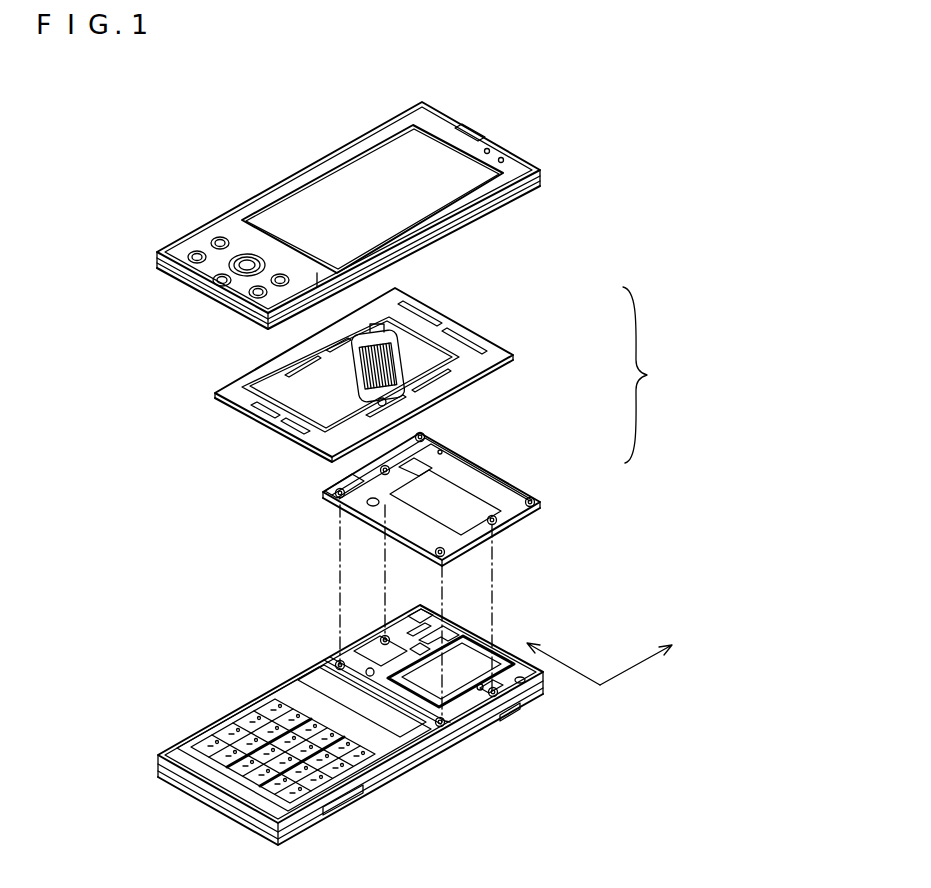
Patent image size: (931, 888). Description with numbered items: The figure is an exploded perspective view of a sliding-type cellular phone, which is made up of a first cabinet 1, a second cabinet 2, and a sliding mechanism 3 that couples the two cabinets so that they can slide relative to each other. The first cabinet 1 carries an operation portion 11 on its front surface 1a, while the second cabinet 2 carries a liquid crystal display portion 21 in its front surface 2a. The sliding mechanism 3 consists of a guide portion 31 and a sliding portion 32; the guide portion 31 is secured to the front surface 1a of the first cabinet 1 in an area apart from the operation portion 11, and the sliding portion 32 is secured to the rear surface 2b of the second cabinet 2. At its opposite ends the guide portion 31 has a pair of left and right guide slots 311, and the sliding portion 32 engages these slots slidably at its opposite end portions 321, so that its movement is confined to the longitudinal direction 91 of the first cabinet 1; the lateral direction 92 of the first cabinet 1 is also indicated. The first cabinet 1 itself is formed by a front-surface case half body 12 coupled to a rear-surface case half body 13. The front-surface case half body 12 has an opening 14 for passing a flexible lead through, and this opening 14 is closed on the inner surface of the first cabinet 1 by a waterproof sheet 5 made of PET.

The first cabinet 1 is at (400, 768).
The front surface 1a is at (312, 675).
The second cabinet 2 is at (295, 173).
The front surface 2a is at (438, 122).
The rear surface 2b is at (482, 217).
The sliding mechanism 3 is at (393, 568).
The waterproof sheet 5 is at (460, 657).
The operation portion 11 is at (239, 798).
The front-surface case half body 12 is at (168, 757).
The rear-surface case half body 13 is at (160, 778).
The opening 14 is at (452, 680).
The liquid crystal display portion 21 is at (384, 150).
The guide portion 31 is at (518, 487).
The guide slots 311 is at (332, 487).
The sliding portion 32 is at (476, 328).
The end portions 321 is at (470, 385).
The longitudinal direction 91 is at (630, 668).
The lateral direction 92 is at (558, 661).